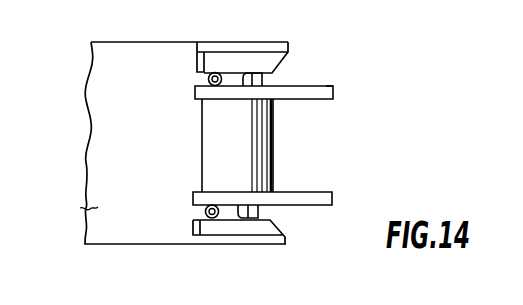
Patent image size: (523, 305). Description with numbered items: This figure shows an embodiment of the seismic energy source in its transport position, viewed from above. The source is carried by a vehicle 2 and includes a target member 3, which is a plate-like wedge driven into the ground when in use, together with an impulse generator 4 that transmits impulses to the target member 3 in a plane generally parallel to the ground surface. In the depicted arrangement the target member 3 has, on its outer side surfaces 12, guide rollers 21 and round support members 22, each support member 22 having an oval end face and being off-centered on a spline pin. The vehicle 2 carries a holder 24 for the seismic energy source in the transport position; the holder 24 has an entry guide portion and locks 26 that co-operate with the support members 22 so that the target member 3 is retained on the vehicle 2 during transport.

The vehicle 2 is at (88, 210).
The target member 3 is at (335, 90).
The impulse generator 4 is at (212, 139).
The side surface 12 is at (313, 84).
The guide roller 21 is at (208, 78).
The support member 22 is at (252, 96).
The holder 24 is at (197, 51).
The lock 26 is at (268, 75).